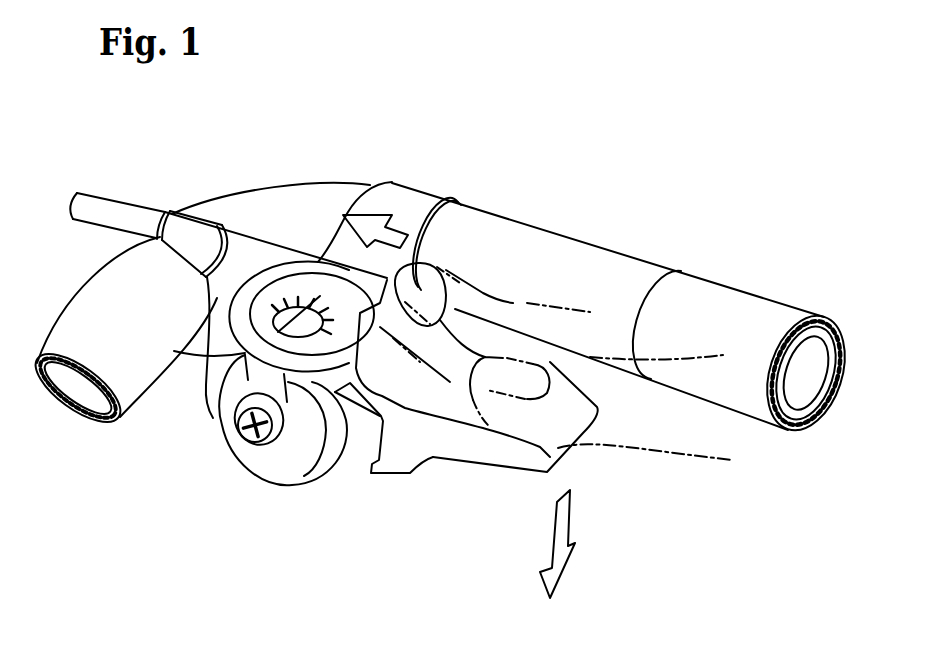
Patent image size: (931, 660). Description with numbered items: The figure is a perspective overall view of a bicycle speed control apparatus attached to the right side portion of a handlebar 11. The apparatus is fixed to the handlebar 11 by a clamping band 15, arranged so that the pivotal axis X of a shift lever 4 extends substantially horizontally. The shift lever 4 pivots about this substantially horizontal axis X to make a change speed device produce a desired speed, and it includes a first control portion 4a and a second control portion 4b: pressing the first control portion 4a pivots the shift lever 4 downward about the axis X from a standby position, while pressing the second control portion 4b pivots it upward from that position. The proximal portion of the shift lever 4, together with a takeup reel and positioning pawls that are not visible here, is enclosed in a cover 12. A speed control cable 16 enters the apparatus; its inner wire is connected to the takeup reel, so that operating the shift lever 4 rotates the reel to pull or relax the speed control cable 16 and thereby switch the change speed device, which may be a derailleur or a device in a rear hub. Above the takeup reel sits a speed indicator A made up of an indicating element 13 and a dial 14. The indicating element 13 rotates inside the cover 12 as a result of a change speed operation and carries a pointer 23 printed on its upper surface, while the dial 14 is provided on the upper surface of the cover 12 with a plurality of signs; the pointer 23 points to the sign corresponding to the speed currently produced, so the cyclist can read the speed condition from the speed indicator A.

The shift lever 4 is at (383, 442).
The first control portion 4a is at (557, 443).
The second control portion 4b is at (437, 267).
The handlebar 11 is at (545, 234).
The cover 12 is at (212, 390).
The indicating element 13 is at (252, 304).
The dial 14 is at (290, 283).
The clamping band 15 is at (428, 202).
The speed control cable 16 is at (116, 214).
The pointer 23 is at (174, 351).
The axis X is at (240, 445).
The speed indicator A is at (315, 229).